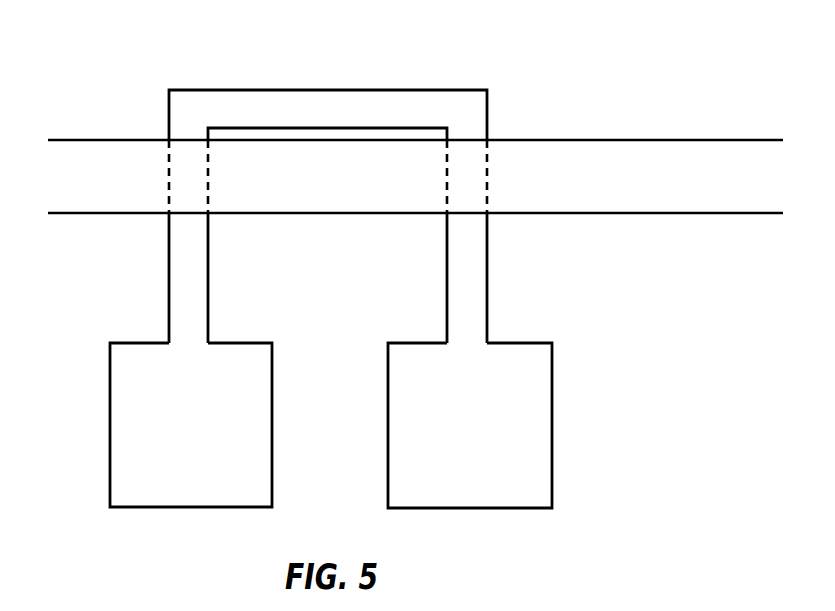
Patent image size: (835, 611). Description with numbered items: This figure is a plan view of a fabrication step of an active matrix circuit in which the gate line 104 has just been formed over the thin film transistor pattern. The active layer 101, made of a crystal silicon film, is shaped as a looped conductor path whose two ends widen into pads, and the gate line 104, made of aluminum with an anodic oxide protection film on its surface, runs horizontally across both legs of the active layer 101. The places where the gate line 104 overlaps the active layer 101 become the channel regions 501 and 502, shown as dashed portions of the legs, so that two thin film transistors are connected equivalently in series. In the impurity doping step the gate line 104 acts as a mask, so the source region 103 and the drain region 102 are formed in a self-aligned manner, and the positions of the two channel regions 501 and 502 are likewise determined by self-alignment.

The active layer 101 is at (323, 102).
The drain region 102 is at (500, 498).
The source region 103 is at (220, 498).
The gate line 104 is at (703, 198).
The channel region 501 is at (183, 178).
The channel region 502 is at (472, 180).